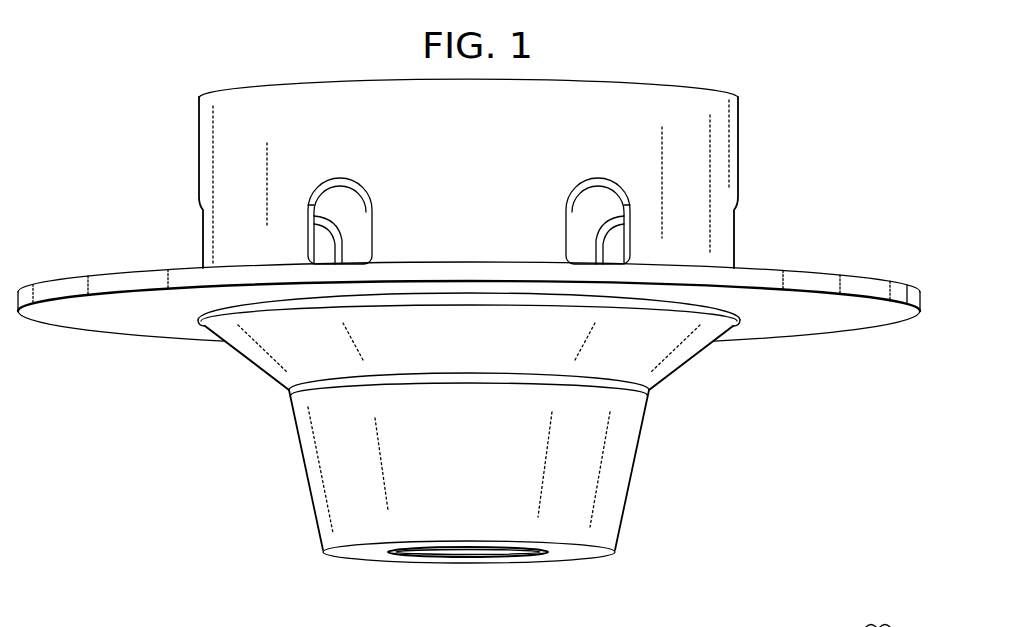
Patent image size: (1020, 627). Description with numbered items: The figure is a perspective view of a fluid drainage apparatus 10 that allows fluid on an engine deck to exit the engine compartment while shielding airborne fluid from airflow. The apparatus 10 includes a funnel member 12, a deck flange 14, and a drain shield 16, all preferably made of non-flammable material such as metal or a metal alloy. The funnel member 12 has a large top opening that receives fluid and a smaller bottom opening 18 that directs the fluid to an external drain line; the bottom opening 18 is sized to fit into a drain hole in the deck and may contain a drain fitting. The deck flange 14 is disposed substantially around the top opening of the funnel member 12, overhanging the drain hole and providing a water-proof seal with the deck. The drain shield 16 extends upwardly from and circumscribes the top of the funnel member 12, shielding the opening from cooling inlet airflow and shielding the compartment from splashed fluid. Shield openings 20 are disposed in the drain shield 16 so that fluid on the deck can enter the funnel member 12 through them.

The fluid drainage apparatus 10 is at (337, 62).
The funnel member 12 is at (305, 474).
The deck flange 14 is at (134, 273).
The drain shield 16 is at (198, 146).
The bottom opening 18 is at (450, 550).
The shield openings 20 is at (356, 225).